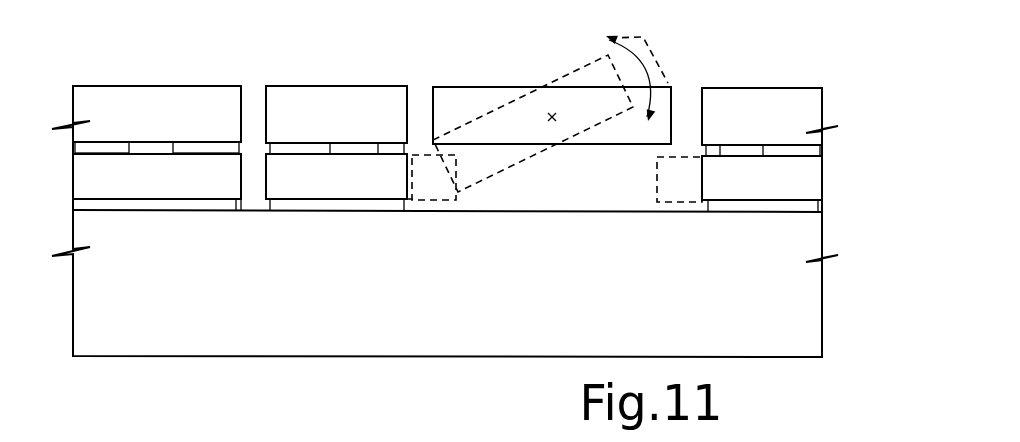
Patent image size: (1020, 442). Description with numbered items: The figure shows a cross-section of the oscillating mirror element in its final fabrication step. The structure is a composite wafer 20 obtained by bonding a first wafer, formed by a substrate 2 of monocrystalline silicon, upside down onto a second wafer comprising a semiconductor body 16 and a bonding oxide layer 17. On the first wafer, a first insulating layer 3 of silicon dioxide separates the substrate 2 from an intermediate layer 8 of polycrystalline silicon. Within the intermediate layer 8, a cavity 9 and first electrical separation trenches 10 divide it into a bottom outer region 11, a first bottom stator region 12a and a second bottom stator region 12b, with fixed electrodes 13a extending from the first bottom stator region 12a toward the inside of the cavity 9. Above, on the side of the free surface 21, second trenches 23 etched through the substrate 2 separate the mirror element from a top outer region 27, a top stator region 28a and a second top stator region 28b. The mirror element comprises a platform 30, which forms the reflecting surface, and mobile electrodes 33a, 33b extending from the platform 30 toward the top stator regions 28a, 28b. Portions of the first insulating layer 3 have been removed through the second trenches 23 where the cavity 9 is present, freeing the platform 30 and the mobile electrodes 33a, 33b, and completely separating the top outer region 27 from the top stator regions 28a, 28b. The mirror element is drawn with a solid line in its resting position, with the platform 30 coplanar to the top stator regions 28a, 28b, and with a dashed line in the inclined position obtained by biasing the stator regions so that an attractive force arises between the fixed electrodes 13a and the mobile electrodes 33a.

The substrate 2 is at (782, 93).
The first insulating layer 3 is at (98, 148).
The intermediate layer 8 is at (783, 197).
The cavity 9 is at (559, 187).
The first electrical separation trenches 10 is at (252, 190).
The bottom outer region 11 is at (158, 167).
The first bottom stator region 12a is at (337, 180).
The second bottom stator region 12b is at (737, 175).
The fixed electrodes 13a is at (437, 190).
The semiconductor body 16 is at (727, 327).
The bonding oxide layer 17 is at (203, 203).
The composite wafer 20 is at (469, 221).
The free surface 21 is at (157, 77).
The second trenches 23 is at (255, 100).
The top outer region 27 is at (147, 112).
The top stator region 28a is at (333, 102).
The second top stator region 28b is at (792, 98).
The platform 30 is at (482, 92).
The mobile electrodes 33a is at (473, 148).
The mobile electrodes 33b is at (673, 203).